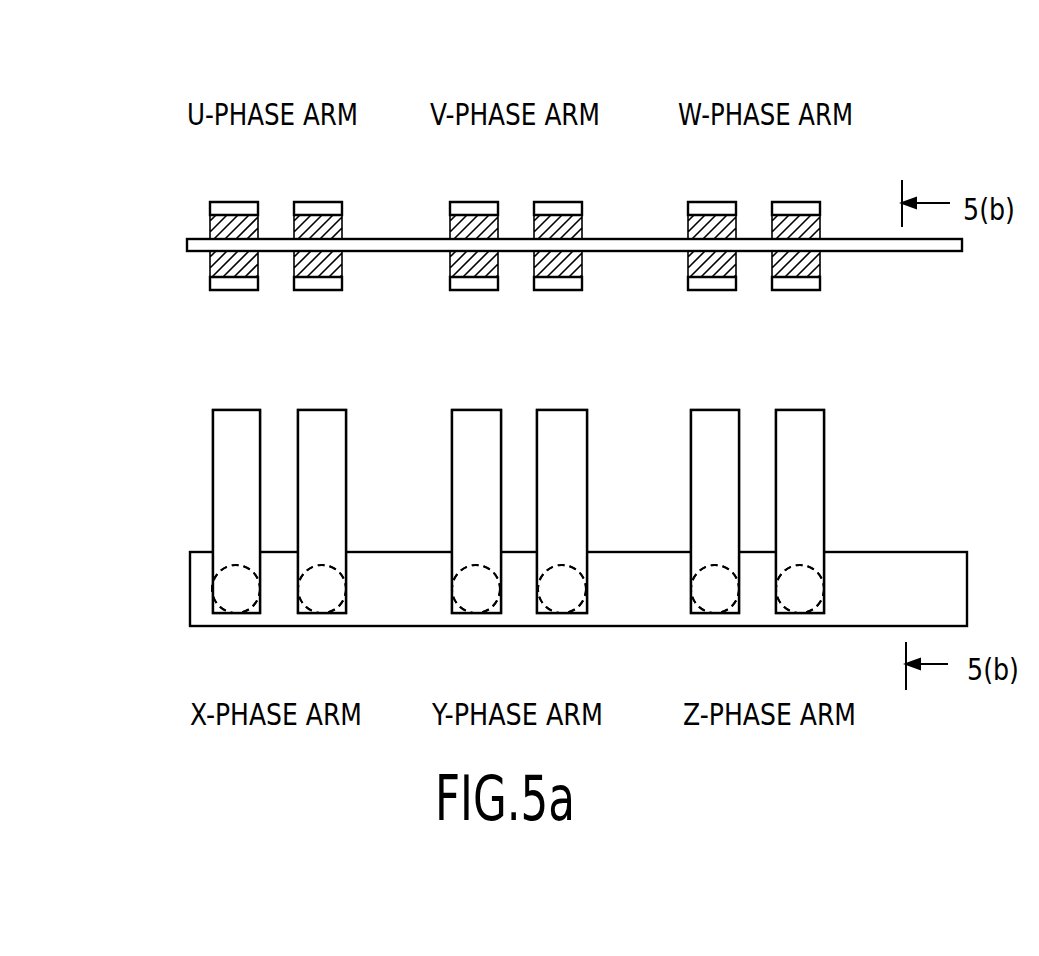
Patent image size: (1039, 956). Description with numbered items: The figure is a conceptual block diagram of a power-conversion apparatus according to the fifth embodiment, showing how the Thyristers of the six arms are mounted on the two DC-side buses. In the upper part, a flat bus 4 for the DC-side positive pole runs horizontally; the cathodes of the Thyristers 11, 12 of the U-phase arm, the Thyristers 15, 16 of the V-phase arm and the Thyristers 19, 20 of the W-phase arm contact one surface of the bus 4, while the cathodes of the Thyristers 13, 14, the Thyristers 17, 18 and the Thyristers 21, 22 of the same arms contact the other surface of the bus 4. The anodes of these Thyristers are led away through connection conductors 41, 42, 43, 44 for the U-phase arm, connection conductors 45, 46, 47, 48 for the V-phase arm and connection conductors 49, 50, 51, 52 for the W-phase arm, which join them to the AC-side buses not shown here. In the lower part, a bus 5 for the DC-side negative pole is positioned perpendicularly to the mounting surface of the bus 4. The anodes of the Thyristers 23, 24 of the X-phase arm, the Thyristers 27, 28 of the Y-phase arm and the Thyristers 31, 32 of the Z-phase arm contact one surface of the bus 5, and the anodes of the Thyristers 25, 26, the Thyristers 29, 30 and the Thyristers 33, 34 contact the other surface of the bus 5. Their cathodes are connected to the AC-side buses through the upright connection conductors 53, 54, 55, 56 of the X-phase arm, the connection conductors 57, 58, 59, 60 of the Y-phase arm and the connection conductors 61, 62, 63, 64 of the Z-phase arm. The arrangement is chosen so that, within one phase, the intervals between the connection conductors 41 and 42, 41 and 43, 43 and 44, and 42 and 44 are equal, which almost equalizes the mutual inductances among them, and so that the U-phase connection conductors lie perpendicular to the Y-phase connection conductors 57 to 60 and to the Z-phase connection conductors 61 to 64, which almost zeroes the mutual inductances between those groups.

The bus for a DC-side positive pole 4 is at (928, 252).
The bus for a DC-side negative pole 5 is at (921, 552).
The Thyrister 11 is at (210, 222).
The Thyrister 12 is at (294, 223).
The Thyrister 13 is at (210, 275).
The Thyrister 14 is at (294, 268).
The Thyrister 15 is at (450, 222).
The Thyrister 16 is at (534, 223).
The Thyrister 17 is at (450, 275).
The Thyrister 18 is at (534, 268).
The Thyrister 19 is at (688, 222).
The Thyrister 20 is at (772, 223).
The Thyrister 21 is at (688, 275).
The Thyrister 22 is at (772, 268).
The Thyrister 23 is at (238, 597).
The Thyrister 24 is at (318, 597).
The Thyrister 25 is at (236, 589).
The Thyrister 26 is at (322, 589).
The Thyrister 27 is at (478, 597).
The Thyrister 28 is at (558, 597).
The Thyrister 29 is at (476, 589).
The Thyrister 30 is at (562, 589).
The Thyrister 31 is at (717, 597).
The Thyrister 32 is at (796, 597).
The Thyrister 33 is at (715, 589).
The Thyrister 34 is at (800, 589).
The connection conductor 41 is at (236, 202).
The connection conductor 42 is at (320, 202).
The connection conductor 43 is at (234, 290).
The connection conductor 44 is at (318, 290).
The connection conductor 45 is at (476, 202).
The connection conductor 46 is at (560, 202).
The connection conductor 47 is at (474, 290).
The connection conductor 48 is at (558, 290).
The connection conductor 49 is at (714, 202).
The connection conductor 50 is at (798, 202).
The connection conductor 51 is at (712, 290).
The connection conductor 52 is at (796, 290).
The connection conductor 53 is at (233, 410).
The connection conductor 54 is at (328, 391).
The connection conductor 55 is at (236, 511).
The connection conductor 56 is at (322, 511).
The connection conductor 57 is at (473, 410).
The connection conductor 58 is at (568, 391).
The connection conductor 59 is at (476, 511).
The connection conductor 60 is at (562, 511).
The connection conductor 61 is at (712, 410).
The connection conductor 62 is at (806, 391).
The connection conductor 63 is at (715, 511).
The connection conductor 64 is at (800, 511).